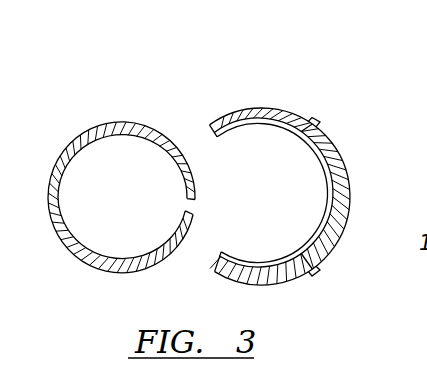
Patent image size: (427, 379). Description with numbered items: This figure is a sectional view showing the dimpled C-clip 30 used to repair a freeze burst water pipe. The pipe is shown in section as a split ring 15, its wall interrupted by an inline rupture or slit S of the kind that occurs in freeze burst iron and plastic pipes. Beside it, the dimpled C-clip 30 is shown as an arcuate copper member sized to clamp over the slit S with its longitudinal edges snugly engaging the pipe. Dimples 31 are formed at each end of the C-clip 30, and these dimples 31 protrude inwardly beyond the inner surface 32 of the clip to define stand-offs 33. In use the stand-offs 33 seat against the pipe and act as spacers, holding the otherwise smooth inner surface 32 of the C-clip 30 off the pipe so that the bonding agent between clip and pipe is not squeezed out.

The snap ring 15 is at (124, 121).
The dimpled C-clip 30 is at (310, 96).
The dimples 31 is at (313, 123).
The inner surface 32 is at (328, 196).
The stand-offs 33 is at (311, 142).
The slit S is at (197, 204).